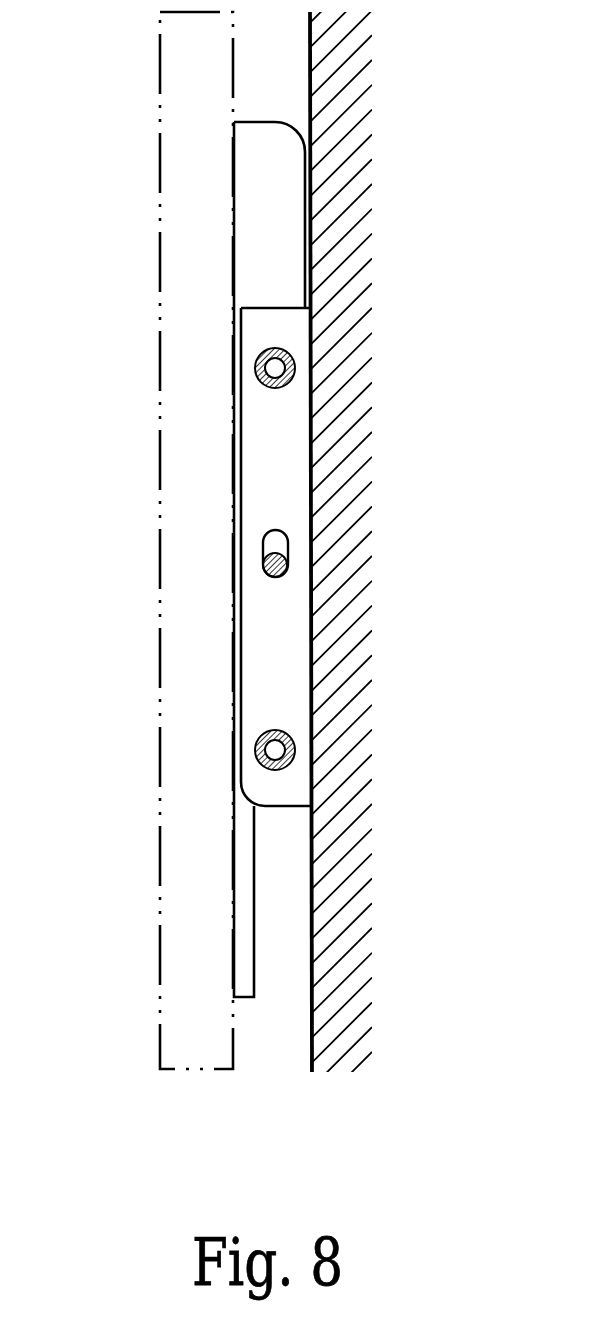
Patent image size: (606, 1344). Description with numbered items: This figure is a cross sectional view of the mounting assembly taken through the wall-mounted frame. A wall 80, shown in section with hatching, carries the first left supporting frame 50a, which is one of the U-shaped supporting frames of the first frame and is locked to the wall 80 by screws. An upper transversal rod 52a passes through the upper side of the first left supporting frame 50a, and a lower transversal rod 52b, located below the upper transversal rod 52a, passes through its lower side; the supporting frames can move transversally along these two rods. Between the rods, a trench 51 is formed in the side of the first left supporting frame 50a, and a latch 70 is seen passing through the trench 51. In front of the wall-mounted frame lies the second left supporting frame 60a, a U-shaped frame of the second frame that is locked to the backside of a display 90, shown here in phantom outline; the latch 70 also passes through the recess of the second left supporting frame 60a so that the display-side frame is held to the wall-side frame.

The wall 80 is at (350, 76).
The second left supporting frame 60a is at (288, 210).
The upper transversal rod 52a is at (296, 368).
The display 90 is at (160, 540).
The first left supporting frame 50a is at (291, 483).
The trench 51 is at (288, 545).
The latch 70 is at (288, 568).
The lower transversal rod 52b is at (296, 750).